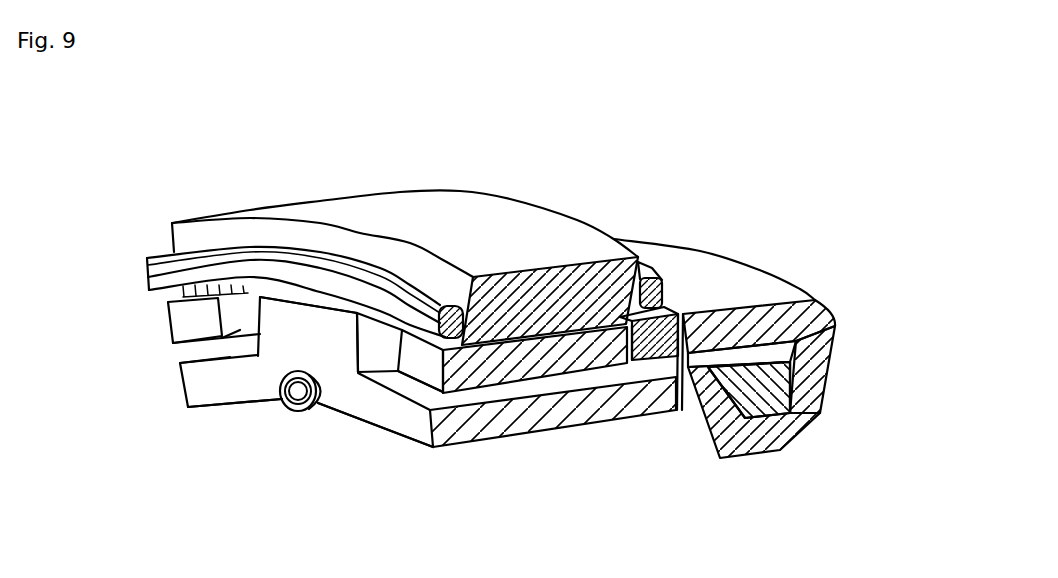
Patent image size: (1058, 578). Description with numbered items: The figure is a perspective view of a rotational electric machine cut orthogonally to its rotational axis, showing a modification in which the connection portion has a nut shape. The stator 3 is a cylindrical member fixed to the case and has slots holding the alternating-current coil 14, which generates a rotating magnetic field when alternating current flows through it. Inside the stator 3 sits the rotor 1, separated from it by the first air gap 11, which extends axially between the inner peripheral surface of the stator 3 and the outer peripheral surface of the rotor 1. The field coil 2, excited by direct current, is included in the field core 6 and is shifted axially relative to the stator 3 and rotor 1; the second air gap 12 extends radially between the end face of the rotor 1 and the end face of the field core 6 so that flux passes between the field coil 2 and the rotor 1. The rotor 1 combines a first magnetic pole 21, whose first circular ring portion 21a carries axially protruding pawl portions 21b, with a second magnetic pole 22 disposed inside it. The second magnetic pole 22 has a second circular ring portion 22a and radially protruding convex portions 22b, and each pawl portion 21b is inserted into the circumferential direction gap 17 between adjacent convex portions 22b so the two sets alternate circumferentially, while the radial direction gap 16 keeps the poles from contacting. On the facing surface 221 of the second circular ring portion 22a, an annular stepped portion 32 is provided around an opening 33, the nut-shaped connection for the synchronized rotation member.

The rotor 1 is at (190, 480).
The field coil 2 is at (780, 394).
The stator 3 is at (432, 208).
The field core 6 is at (838, 364).
The first air gap 11 is at (567, 322).
The second air gap 12 is at (678, 318).
The alternating-current coil 14 is at (267, 265).
The radial direction gap 16 is at (333, 358).
The circumferential direction gap 17 is at (238, 327).
The first magnetic pole 21 is at (687, 307).
The first circular ring portion 21a is at (716, 300).
The pawl portion 21b is at (197, 331).
The second magnetic pole 22 is at (158, 377).
The second circular ring portion 22a is at (363, 403).
The convex portion 22b is at (286, 340).
The stepped portion 32 is at (326, 412).
The opening 33 is at (290, 414).
The facing surface 221 is at (196, 388).